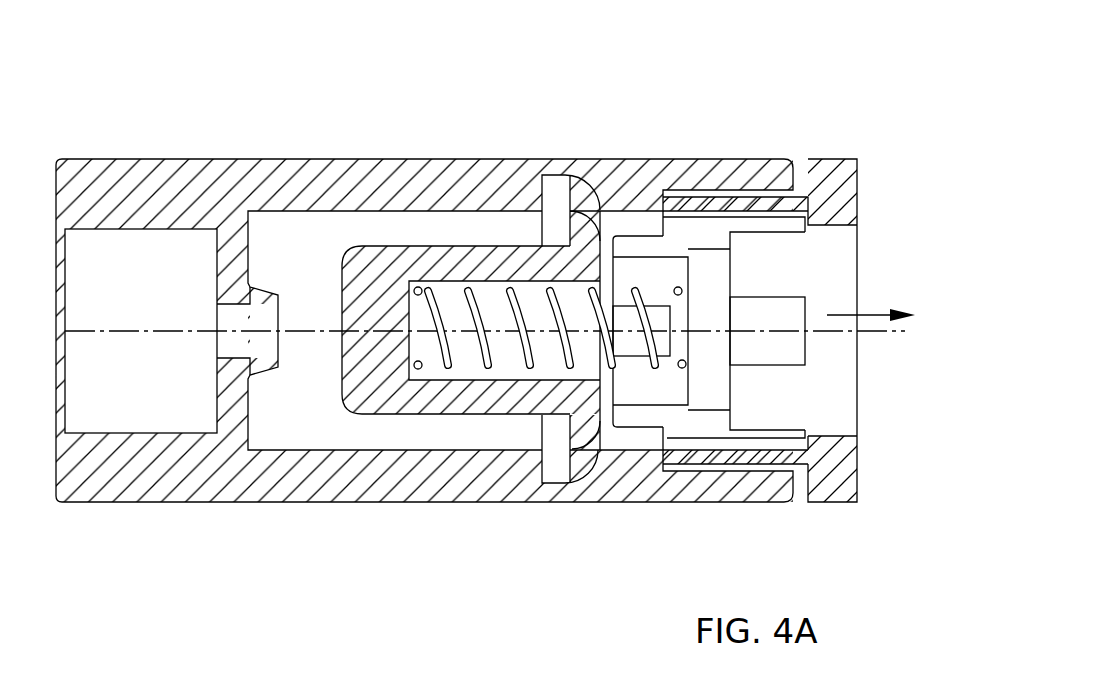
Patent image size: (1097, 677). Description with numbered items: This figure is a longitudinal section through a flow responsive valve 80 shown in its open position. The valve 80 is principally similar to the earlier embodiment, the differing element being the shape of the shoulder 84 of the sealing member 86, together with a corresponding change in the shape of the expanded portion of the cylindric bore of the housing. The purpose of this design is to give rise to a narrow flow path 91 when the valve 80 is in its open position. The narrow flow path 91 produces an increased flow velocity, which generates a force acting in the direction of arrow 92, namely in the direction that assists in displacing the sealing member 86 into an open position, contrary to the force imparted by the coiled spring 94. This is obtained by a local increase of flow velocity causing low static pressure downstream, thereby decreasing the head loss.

The valve 80 is at (659, 114).
The shoulder 84 is at (585, 425).
The sealing member 86 is at (392, 385).
The narrow flow path 91 is at (591, 215).
The arrow 92 is at (875, 315).
The coiled spring 94 is at (450, 317).